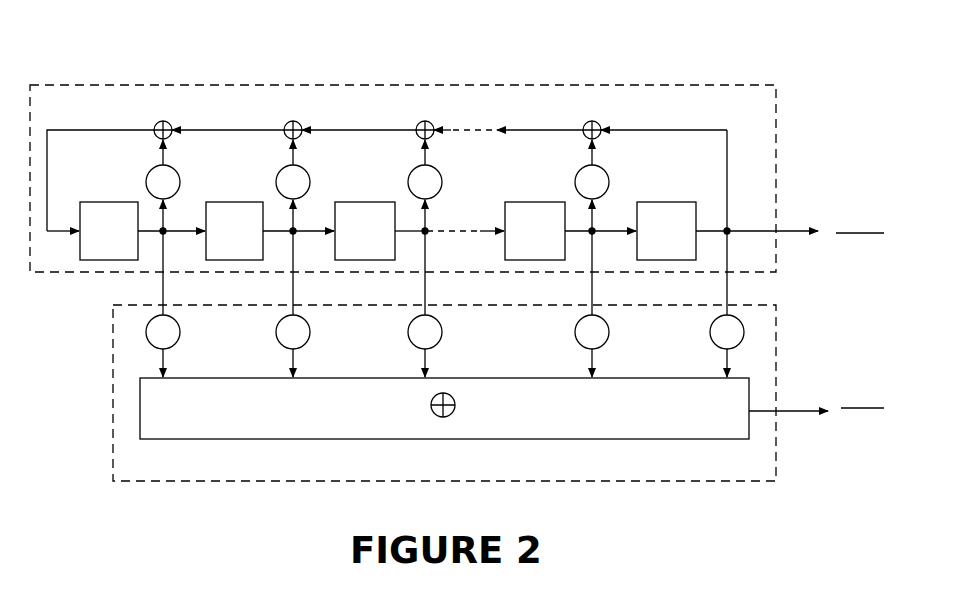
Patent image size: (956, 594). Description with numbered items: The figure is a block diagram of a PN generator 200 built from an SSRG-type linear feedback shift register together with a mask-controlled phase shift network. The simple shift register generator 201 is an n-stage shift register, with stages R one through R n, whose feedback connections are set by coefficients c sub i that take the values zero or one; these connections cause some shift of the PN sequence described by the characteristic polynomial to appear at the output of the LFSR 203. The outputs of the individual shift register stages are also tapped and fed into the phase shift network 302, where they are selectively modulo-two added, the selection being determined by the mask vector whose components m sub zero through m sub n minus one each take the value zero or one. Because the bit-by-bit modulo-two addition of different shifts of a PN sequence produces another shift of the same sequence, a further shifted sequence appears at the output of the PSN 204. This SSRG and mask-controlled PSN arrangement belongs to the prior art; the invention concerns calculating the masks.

The pseudorandom sequence generator system 200 is at (401, 47).
The simple shift register generator (SSRG) 201 is at (669, 86).
The output of the LFSR 203 is at (859, 202).
The output of the PSN 204 is at (861, 438).
The mask-controlled phase shift network (PSN) 302 is at (112, 368).